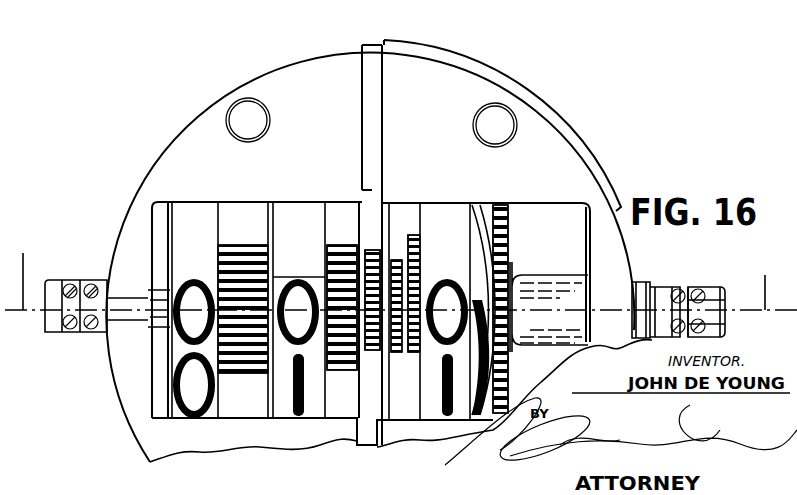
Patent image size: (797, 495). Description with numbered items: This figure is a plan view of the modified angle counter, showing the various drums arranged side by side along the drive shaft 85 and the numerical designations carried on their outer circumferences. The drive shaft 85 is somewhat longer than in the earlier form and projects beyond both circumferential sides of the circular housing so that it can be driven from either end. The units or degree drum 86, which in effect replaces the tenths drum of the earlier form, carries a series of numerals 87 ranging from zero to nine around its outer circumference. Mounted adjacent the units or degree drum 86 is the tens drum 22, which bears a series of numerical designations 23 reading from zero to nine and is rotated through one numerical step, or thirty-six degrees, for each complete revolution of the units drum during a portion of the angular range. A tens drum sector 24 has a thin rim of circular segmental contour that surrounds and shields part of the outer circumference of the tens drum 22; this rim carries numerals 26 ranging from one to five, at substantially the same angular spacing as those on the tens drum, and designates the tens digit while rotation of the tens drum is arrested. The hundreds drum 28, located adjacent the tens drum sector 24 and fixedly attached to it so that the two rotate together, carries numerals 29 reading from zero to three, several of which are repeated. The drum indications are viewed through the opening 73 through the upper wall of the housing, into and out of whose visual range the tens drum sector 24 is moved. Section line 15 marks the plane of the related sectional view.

The opening 73 is at (155, 213).
The numerals 29 is at (197, 208).
The numerals 26 is at (297, 212).
The tens drum sector 24 is at (302, 207).
The numerals 87 is at (448, 217).
The drive shaft 85 is at (717, 296).
The hundreds drum 28 is at (176, 408).
The numerical designations 23 is at (300, 398).
The tens drum 22 is at (313, 413).
The units or degree drum 86 is at (458, 410).
The section line 15 is at (401, 298).